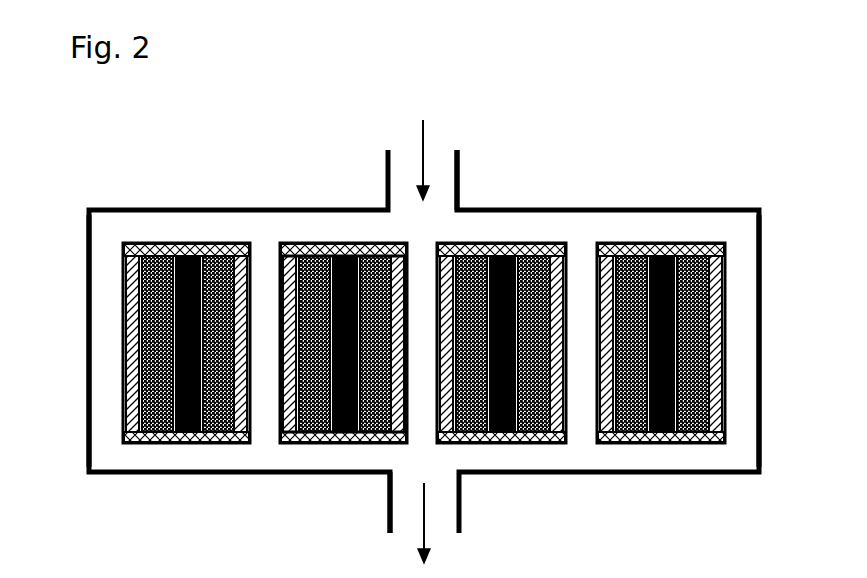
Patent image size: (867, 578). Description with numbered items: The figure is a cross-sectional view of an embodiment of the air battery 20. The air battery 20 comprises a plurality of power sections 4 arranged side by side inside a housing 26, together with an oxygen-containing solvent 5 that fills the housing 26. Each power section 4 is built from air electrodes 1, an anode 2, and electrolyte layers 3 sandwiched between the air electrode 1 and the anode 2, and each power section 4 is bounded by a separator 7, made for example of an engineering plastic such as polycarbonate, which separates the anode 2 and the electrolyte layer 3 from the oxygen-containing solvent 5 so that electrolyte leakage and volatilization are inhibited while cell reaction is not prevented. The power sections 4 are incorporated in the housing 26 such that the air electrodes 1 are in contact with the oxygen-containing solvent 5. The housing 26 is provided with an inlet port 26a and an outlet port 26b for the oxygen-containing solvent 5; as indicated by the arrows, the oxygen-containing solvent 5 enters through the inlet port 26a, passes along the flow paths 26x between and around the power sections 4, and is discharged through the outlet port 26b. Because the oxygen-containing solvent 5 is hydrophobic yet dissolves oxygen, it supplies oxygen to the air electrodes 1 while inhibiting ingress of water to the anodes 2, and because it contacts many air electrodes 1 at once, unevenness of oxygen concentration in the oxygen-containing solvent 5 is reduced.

The air electrode 1 is at (133, 430).
The anode 2 is at (188, 430).
The electrolyte layer 3 is at (158, 430).
The power section 4 is at (130, 503).
The oxygen-containing solvent 5 is at (303, 228).
The separator 7 is at (185, 243).
The air battery 20 is at (409, 85).
The housing 26 is at (420, 359).
The inlet port 26a is at (440, 184).
The outlet port 26b is at (403, 503).
The flow path 26x is at (108, 320).